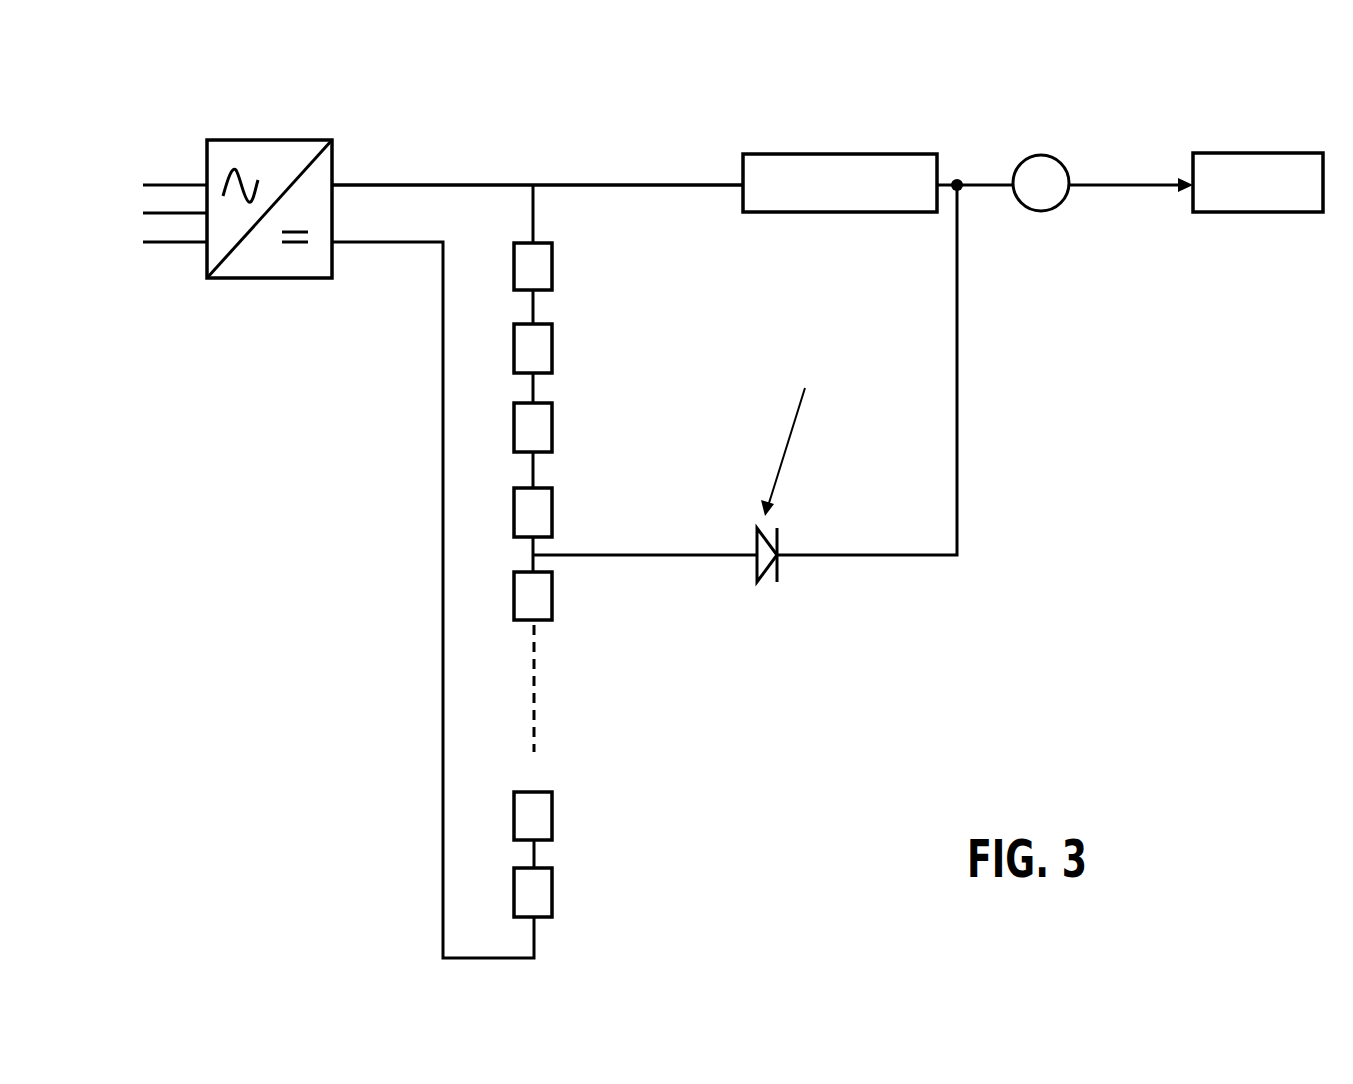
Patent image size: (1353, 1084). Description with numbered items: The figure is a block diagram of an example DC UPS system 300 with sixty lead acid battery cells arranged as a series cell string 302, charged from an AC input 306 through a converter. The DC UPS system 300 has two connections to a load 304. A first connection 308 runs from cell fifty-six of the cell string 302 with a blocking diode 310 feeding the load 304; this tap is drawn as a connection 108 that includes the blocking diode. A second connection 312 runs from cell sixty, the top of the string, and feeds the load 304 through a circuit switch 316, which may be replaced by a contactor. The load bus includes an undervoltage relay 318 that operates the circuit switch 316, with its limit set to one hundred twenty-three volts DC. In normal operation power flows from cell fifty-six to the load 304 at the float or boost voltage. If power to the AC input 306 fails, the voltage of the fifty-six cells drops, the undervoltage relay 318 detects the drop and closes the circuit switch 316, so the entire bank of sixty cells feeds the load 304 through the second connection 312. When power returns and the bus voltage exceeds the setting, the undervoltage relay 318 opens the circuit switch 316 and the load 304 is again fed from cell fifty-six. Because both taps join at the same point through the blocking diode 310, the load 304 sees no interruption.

The DC UPS system 300 is at (390, 100).
The battery cell string 302 is at (468, 252).
The load 304 is at (1305, 195).
The AC input 306 is at (205, 203).
The first connection 308 is at (580, 512).
The blocking diode 310 is at (762, 580).
The second connection 312 is at (699, 185).
The circuit switch 316 is at (876, 140).
The undervoltage relay 318 is at (1041, 155).
The connection 108 is at (740, 555).